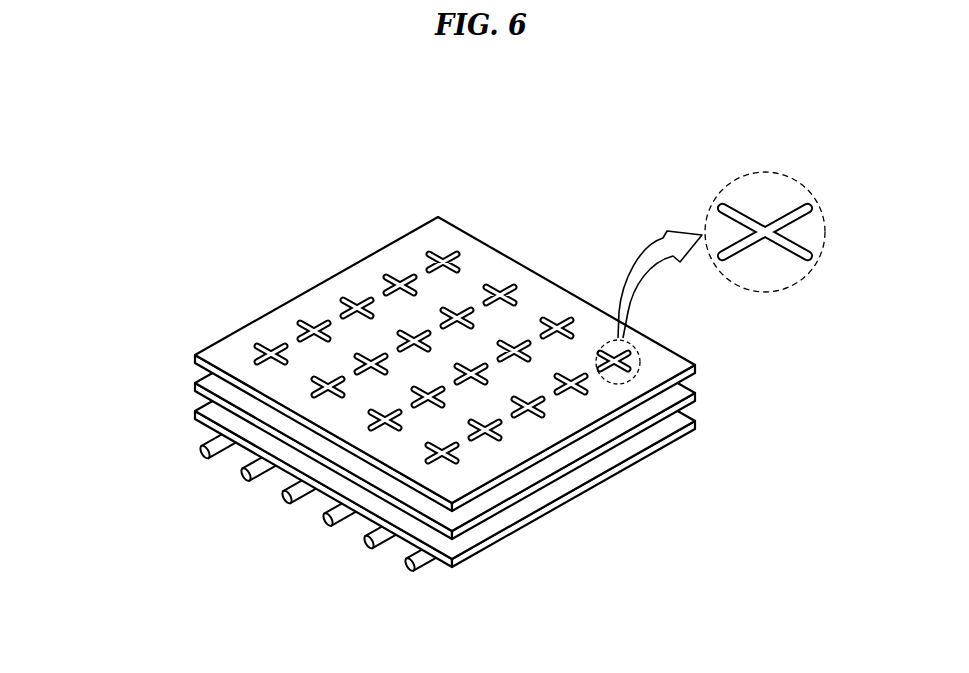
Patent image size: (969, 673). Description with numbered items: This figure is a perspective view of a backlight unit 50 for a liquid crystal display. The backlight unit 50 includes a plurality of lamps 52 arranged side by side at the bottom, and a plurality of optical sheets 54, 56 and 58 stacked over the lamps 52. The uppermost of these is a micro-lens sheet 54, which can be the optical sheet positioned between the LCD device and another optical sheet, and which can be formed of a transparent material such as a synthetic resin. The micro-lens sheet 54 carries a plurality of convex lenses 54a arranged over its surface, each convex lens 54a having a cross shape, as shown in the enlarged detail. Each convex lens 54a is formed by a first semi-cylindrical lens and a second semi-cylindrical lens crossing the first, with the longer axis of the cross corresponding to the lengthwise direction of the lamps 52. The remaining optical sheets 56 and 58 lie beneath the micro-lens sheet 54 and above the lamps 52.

The backlight unit 50 is at (413, 392).
The lamps 52 is at (283, 500).
The micro-lens sheet 54 is at (219, 352).
The convex lenses 54a is at (778, 200).
The optical sheet 56 is at (195, 387).
The optical sheet 58 is at (195, 413).